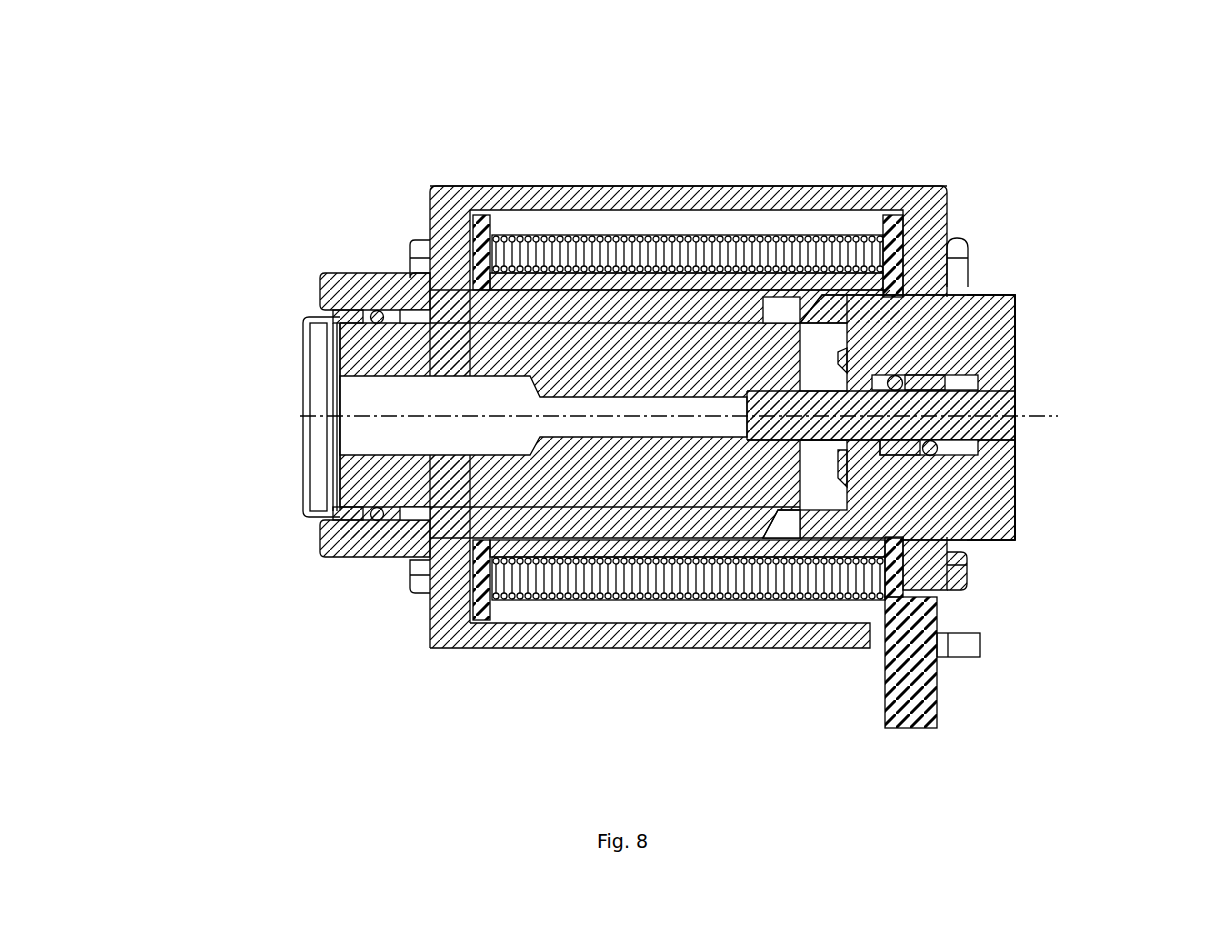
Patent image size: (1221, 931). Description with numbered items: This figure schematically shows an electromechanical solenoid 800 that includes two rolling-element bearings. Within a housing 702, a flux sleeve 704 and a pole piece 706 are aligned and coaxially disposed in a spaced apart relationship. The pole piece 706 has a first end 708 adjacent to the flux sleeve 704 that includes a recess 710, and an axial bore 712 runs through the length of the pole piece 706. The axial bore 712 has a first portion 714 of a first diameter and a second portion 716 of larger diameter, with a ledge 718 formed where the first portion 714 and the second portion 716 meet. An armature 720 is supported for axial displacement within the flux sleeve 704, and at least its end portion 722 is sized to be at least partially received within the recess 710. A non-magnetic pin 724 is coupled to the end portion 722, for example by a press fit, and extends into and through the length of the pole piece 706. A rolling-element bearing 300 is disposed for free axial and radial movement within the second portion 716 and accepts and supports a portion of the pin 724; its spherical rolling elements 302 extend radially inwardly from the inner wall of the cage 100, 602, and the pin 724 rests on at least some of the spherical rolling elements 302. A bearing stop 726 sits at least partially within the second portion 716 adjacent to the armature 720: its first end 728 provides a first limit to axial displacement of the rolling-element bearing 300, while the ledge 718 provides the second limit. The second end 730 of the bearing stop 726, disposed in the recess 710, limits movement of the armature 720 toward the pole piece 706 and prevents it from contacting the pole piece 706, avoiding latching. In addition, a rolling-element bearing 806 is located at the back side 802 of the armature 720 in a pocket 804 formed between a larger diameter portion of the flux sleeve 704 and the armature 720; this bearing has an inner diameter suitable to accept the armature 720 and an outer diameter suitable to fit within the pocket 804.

The solenoid 800 is at (290, 108).
The back side 802 is at (305, 360).
The pocket 804 is at (412, 315).
The rolling-element bearing 806 is at (363, 553).
The housing 702 is at (450, 650).
The flux sleeve 704 is at (400, 553).
The pole piece 706 is at (873, 537).
The first end 708 is at (823, 300).
The recess 710 is at (823, 483).
The axial bore 712 is at (1017, 387).
The first portion 714 is at (1017, 442).
The second portion 716 is at (1017, 326).
The ledge 718 is at (1018, 475).
The armature 720 is at (305, 490).
The end portion 722 is at (783, 305).
The pin 724 is at (1017, 403).
The bearing stop 726 is at (970, 270).
The first end 728 is at (888, 455).
The second end 730 is at (840, 492).
The rolling-element bearing 300 is at (973, 292).
The spherical rolling elements 302 is at (1017, 515).
The cage 100 is at (1015, 307).
The cage 602 is at (1015, 307).